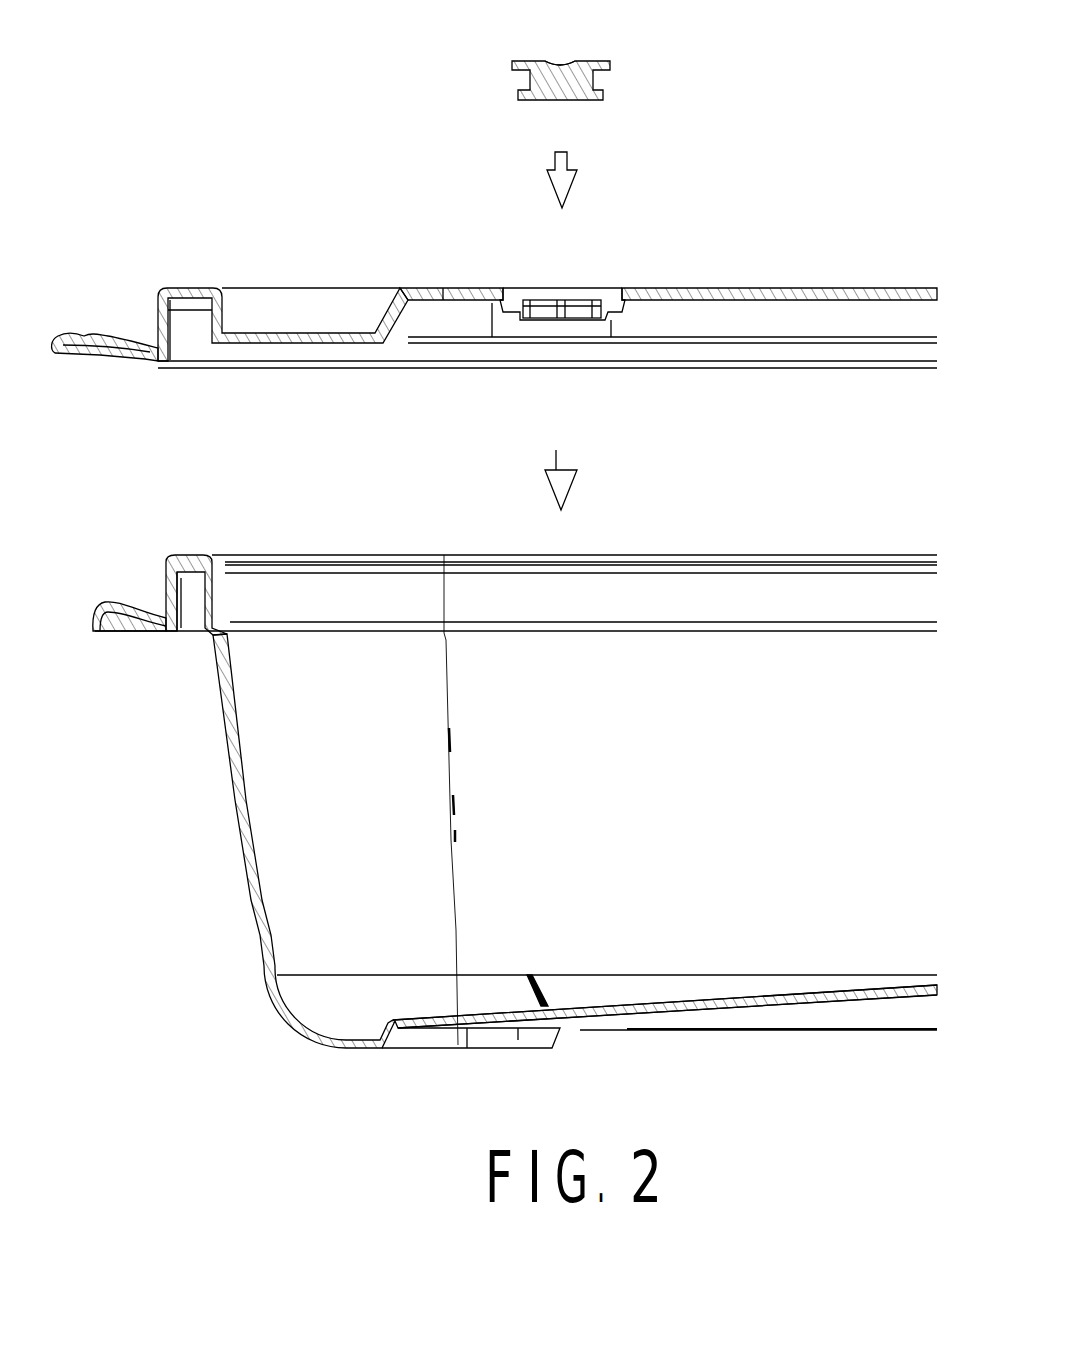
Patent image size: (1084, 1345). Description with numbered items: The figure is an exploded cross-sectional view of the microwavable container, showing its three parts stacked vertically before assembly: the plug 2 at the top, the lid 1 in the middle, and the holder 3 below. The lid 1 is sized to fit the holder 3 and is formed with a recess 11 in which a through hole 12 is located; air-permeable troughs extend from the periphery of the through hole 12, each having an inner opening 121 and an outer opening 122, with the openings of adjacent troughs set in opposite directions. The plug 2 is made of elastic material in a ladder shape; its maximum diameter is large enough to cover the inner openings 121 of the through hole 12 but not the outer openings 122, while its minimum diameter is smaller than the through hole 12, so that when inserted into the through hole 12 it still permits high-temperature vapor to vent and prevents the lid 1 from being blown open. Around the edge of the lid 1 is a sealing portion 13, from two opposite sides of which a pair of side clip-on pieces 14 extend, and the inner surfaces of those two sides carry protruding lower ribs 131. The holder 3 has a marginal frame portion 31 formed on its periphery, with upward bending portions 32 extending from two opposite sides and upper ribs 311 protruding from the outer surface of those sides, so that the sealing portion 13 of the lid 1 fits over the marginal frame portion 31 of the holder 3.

The lid 1 is at (747, 290).
The recess 11 is at (510, 300).
The through hole 12 is at (515, 325).
The inner opening 121 is at (527, 300).
The outer opening 122 is at (572, 300).
The sealing portion 13 is at (283, 311).
The lower rib 131 is at (170, 330).
The side clip-on piece 14 is at (78, 336).
The plug 2 is at (580, 61).
The holder 3 is at (240, 806).
The marginal frame portion 31 is at (167, 548).
The upper rib 311 is at (177, 578).
The upward bending portion 32 is at (106, 608).